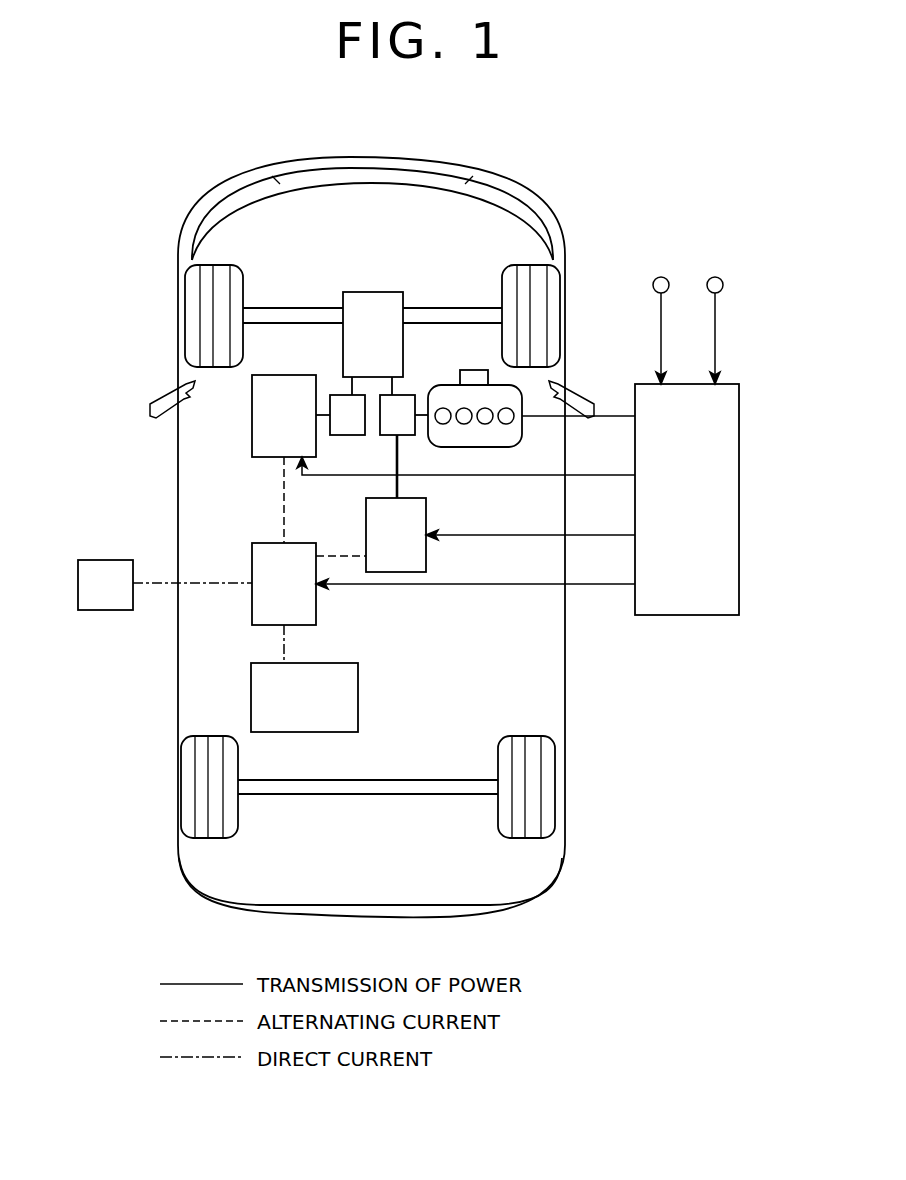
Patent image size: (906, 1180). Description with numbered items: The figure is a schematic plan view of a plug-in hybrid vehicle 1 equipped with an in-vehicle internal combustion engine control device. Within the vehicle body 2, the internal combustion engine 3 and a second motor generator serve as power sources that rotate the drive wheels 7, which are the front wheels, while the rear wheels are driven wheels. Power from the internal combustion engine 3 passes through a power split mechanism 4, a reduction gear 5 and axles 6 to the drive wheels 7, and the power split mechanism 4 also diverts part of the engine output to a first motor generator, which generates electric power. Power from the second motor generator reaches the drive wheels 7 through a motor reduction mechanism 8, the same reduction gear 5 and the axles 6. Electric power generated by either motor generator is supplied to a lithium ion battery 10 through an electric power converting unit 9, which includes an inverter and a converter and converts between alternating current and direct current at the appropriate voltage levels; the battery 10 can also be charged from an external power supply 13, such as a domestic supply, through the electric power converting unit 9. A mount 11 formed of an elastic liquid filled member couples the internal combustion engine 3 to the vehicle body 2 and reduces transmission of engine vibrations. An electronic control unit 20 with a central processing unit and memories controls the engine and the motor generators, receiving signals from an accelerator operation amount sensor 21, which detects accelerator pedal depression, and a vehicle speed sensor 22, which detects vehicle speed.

The vehicle 1 is at (596, 121).
The vehicle body 2 is at (430, 158).
The internal combustion engine 3 is at (518, 446).
The power split mechanism 4 is at (410, 395).
The reduction gear 5 is at (375, 292).
The axles 6 is at (448, 308).
The drive wheels 7 is at (527, 265).
The motor reduction mechanism 8 is at (336, 395).
The electric power converting unit 9 is at (252, 556).
The battery 10 is at (268, 663).
The mount 11 is at (474, 370).
The external power supply 13 is at (106, 560).
The electronic control unit 20 is at (690, 617).
The accelerator operation amount sensor 21 is at (661, 276).
The vehicle speed sensor 22 is at (715, 276).